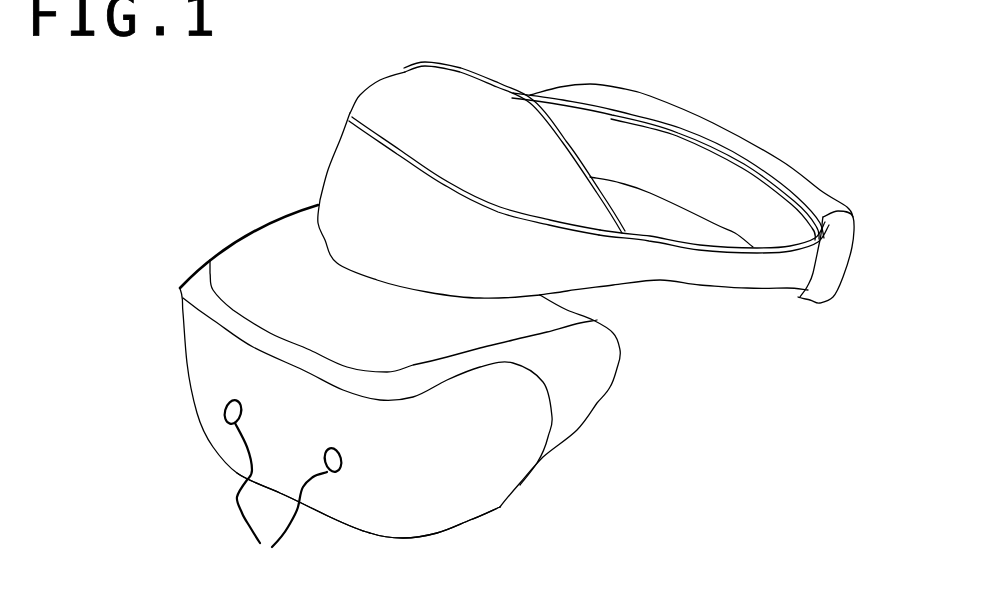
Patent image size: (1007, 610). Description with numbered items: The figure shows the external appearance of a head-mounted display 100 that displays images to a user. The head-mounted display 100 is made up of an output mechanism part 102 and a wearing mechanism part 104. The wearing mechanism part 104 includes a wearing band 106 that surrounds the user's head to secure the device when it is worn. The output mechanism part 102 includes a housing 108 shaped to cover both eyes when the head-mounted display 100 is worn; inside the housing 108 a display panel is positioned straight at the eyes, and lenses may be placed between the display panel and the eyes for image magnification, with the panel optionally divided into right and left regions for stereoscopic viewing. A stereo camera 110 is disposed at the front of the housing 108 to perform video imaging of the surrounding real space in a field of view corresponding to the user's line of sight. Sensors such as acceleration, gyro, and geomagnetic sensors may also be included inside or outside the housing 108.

The head-mounted display 100 is at (285, 143).
The output mechanism part 102 is at (135, 195).
The wearing mechanism part 104 is at (860, 131).
The wearing band 106 is at (713, 285).
The housing 108 is at (500, 507).
The stereo camera 110 is at (283, 490).